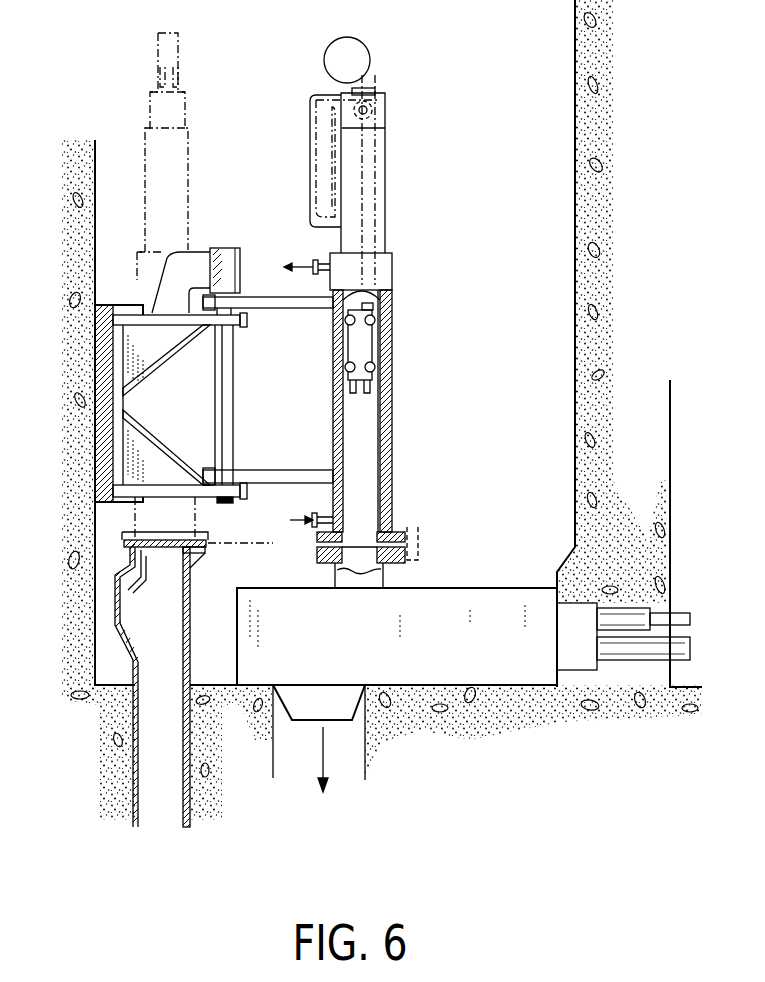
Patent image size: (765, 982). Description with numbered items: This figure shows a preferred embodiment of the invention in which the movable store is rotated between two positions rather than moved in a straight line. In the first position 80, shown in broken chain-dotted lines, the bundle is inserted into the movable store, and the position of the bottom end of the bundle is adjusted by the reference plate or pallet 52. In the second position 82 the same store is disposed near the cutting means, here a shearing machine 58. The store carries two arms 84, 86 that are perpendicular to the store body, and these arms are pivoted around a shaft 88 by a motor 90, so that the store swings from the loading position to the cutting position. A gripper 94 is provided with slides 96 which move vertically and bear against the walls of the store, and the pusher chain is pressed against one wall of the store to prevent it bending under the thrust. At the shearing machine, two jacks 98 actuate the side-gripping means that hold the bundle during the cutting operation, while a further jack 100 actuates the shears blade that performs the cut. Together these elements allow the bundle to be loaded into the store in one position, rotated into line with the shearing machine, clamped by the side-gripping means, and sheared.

The reference plate or pallet 52 is at (146, 585).
The shearing machine 58 is at (328, 648).
The first position 80 is at (188, 133).
The second position 82 is at (387, 152).
The arm 84 is at (280, 309).
The arm 86 is at (280, 484).
The shaft 88 is at (222, 452).
The motor 90 is at (225, 253).
The gripper 94 is at (372, 367).
The slides 96 is at (372, 320).
The jacks actuating the side-gripping means 98 is at (683, 612).
The jack actuating the shears blade 100 is at (635, 645).